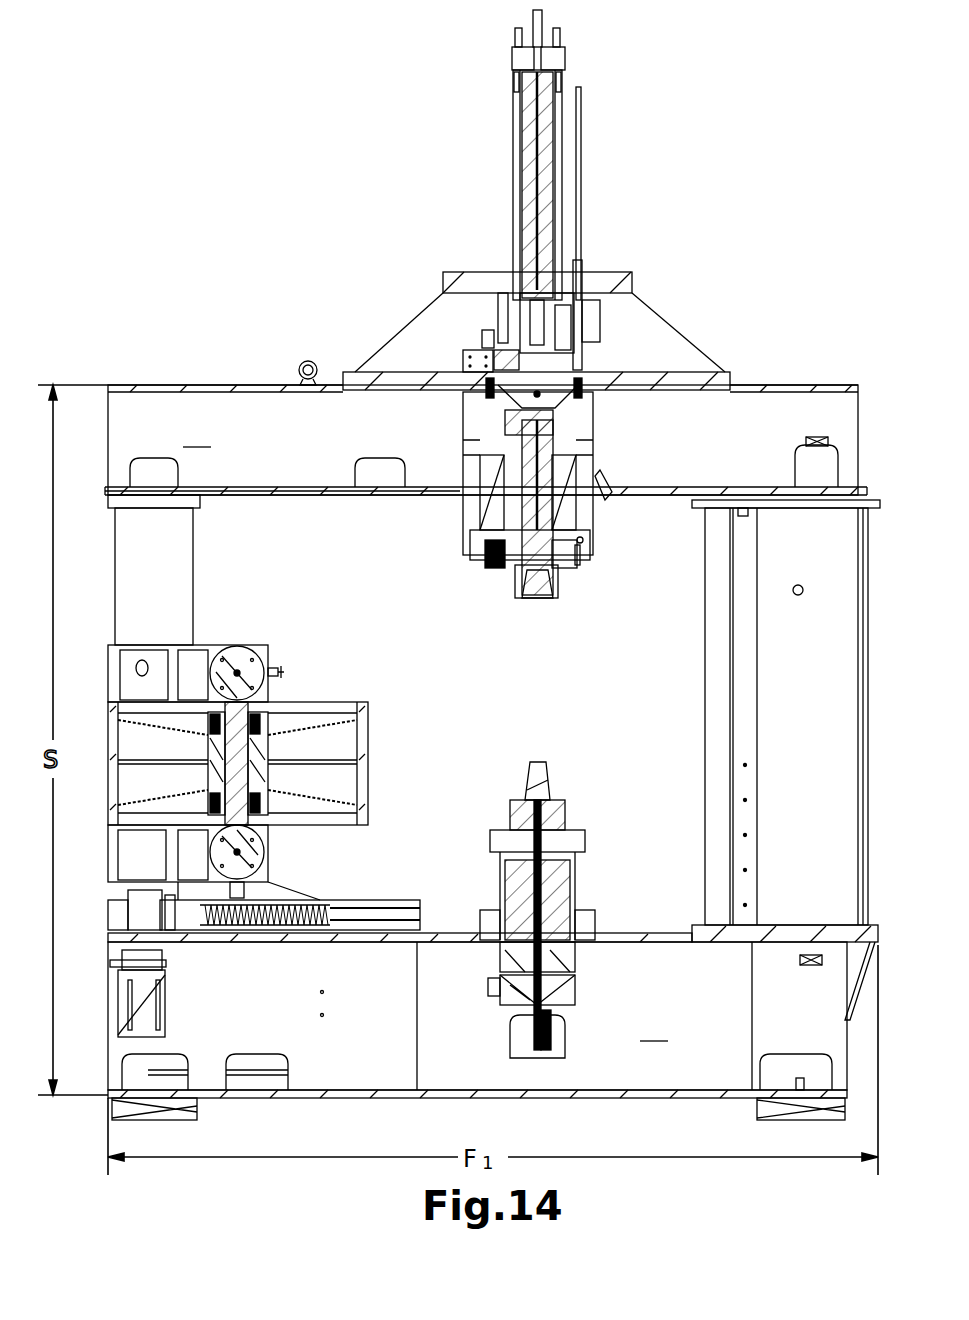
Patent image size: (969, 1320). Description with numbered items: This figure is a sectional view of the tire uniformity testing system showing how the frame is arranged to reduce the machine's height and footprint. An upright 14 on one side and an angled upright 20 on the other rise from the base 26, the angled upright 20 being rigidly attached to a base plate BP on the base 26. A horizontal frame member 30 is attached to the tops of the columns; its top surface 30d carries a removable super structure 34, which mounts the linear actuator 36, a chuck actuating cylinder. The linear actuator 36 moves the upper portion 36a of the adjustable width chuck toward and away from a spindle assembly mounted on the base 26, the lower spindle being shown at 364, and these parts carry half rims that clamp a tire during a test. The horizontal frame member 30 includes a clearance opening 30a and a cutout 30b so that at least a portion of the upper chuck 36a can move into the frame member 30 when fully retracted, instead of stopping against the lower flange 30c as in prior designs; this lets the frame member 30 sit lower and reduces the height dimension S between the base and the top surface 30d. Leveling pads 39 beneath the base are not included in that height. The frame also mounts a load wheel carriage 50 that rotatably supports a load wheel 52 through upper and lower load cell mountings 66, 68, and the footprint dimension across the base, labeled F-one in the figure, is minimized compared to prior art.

The upright 14 is at (150, 585).
The angled upright 20 is at (815, 645).
The base 26 is at (491, 994).
The horizontal frame member 30 is at (492, 434).
The clearance opening 30a is at (615, 415).
The cutout 30b is at (607, 480).
The lower flange 30c is at (280, 495).
The top surface 30d is at (235, 383).
The super structure 34 is at (700, 330).
The linear actuator 36 is at (530, 102).
The upper portion of adjustable width chuck 36a is at (593, 556).
The leveling pads 39 is at (160, 1108).
The load wheel carriage 50 is at (300, 668).
The load wheel 52 is at (360, 695).
The upper load cell and load cell mounting 66 is at (240, 655).
The lower load cell and load cell mounting 68 is at (260, 847).
The lower spindle 364 is at (590, 825).
The base plate BP is at (872, 925).